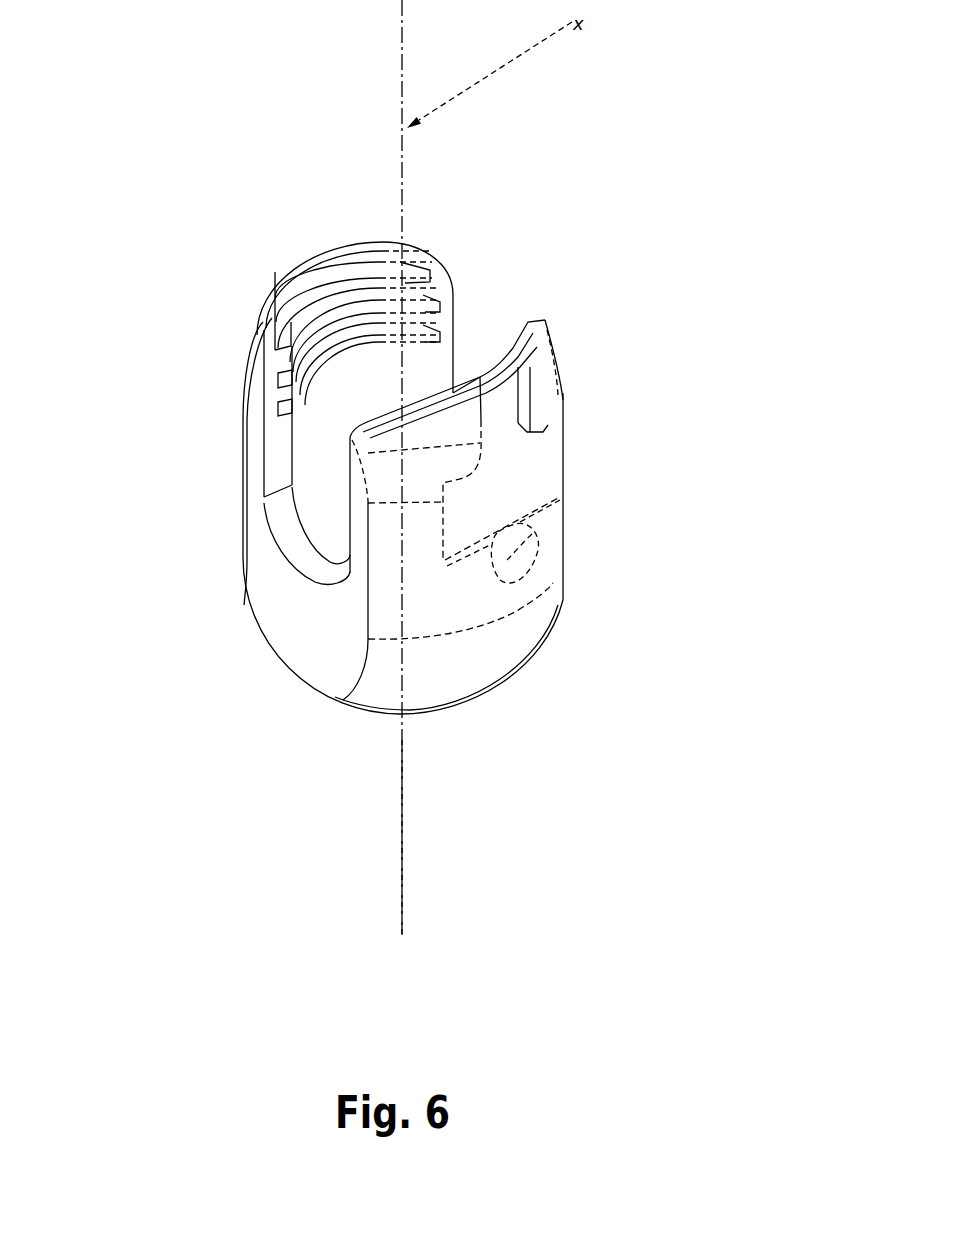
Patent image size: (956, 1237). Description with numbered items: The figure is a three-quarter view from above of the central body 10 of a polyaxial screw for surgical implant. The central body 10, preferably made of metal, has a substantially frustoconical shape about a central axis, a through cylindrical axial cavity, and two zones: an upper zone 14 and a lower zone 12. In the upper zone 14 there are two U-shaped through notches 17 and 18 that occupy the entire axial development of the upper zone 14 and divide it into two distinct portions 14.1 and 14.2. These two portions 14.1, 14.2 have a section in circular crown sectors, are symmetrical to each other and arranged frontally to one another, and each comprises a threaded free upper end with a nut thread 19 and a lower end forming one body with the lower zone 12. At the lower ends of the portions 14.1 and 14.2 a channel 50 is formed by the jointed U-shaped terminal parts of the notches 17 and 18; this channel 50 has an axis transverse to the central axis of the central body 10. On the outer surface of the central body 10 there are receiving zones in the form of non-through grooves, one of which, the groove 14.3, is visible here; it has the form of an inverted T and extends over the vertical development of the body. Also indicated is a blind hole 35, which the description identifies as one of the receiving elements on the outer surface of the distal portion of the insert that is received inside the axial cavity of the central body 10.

The central body 10 is at (567, 631).
The lower zone 12 is at (315, 782).
The upper zone 14 is at (210, 370).
The portion 14.1 is at (567, 341).
The portion 14.2 is at (288, 256).
The groove 14.3 is at (507, 488).
The U-shaped through notch 17 is at (513, 310).
The U-shaped through notch 18 is at (275, 460).
The nut thread 19 is at (357, 297).
The blind hole 35 is at (510, 545).
The channel 50 is at (320, 540).